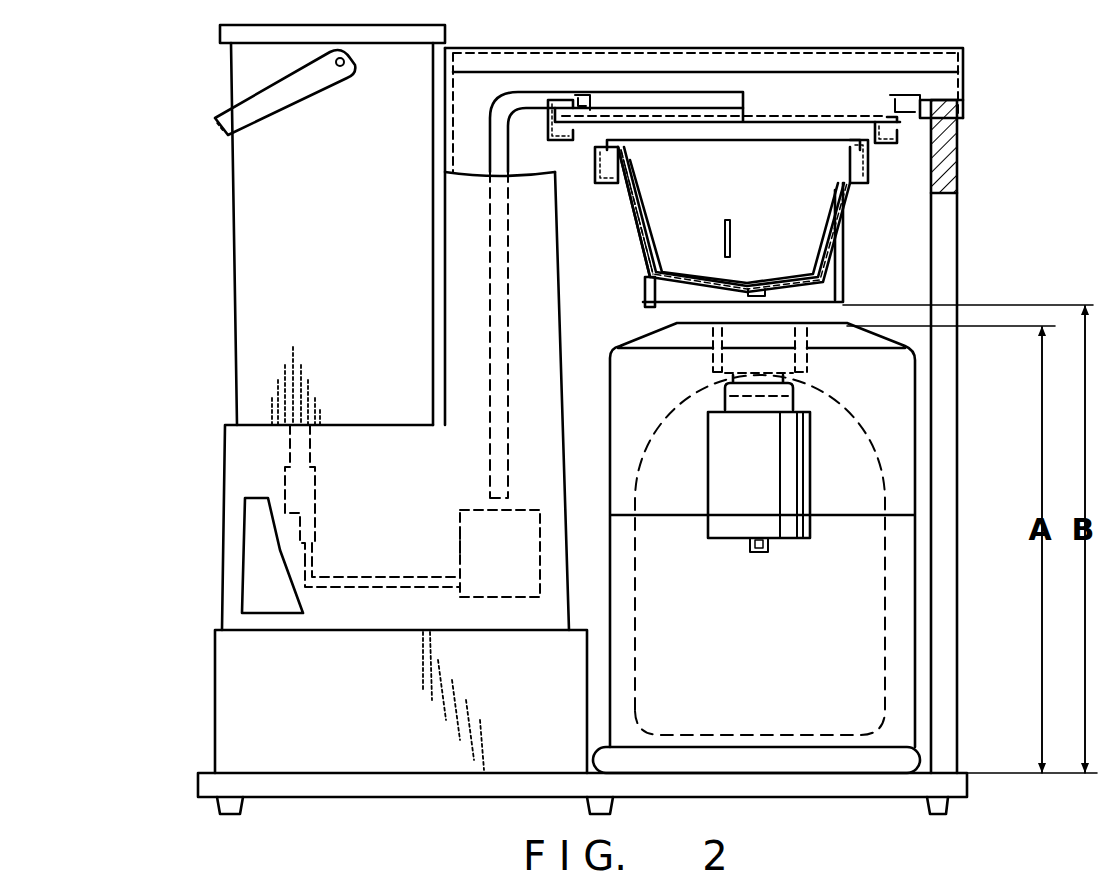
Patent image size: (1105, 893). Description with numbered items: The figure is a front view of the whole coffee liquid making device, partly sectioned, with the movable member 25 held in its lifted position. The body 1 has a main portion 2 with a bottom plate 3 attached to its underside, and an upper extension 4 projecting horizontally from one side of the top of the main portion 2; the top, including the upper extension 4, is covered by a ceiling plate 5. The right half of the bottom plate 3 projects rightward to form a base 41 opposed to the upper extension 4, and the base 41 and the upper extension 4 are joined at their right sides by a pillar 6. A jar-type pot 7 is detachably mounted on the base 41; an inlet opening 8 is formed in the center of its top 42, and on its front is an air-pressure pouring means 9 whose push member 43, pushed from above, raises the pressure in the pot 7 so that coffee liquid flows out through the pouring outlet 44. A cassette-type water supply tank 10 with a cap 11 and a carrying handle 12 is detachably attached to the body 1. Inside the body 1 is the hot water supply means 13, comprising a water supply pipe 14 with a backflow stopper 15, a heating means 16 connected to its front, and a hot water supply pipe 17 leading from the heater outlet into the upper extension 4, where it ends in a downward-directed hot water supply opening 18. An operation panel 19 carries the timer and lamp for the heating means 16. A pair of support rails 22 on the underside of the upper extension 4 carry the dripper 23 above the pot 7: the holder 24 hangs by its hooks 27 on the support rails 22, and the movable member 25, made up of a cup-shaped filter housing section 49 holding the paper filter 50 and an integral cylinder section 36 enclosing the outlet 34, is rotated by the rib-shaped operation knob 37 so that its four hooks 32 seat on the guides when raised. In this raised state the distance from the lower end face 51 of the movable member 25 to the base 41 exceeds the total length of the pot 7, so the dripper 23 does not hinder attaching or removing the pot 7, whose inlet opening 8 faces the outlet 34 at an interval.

The body 1 is at (211, 620).
The main portion 2 is at (225, 470).
The bottom plate 3 is at (268, 780).
The upper extension 4 is at (830, 92).
The ceiling plate 5 is at (660, 48).
The pillar 6 is at (935, 578).
The pot 7 is at (870, 655).
The inlet opening 8 is at (783, 366).
The pouring means 9 is at (798, 473).
The water supply tank 10 is at (237, 270).
The cap 11 is at (233, 34).
The handle 12 is at (262, 112).
The hot water supply means 13 is at (457, 507).
The water supply pipe 14 is at (383, 590).
The backflow stopper 15 is at (316, 504).
The heating means 16 is at (462, 540).
The hot water supply pipe 17 is at (508, 368).
The hot water supply opening 18 is at (738, 124).
The operation panel 19 is at (252, 560).
The support rails 22 is at (562, 128).
The dripper 23 is at (855, 210).
The holder 24 is at (600, 176).
The movable member 25 is at (645, 270).
The hooks 27 is at (588, 110).
The hooks 32 is at (847, 160).
The outlet 34 is at (755, 288).
The cylinder section 36 is at (845, 277).
The operation knob 37 is at (722, 237).
The base 41 is at (912, 785).
The top 42 is at (640, 330).
The push member 43 is at (725, 392).
The pouring outlet 44 is at (752, 548).
The filter housing section 49 is at (640, 240).
The paper filter 50 is at (633, 220).
The lower end face 51 is at (645, 301).